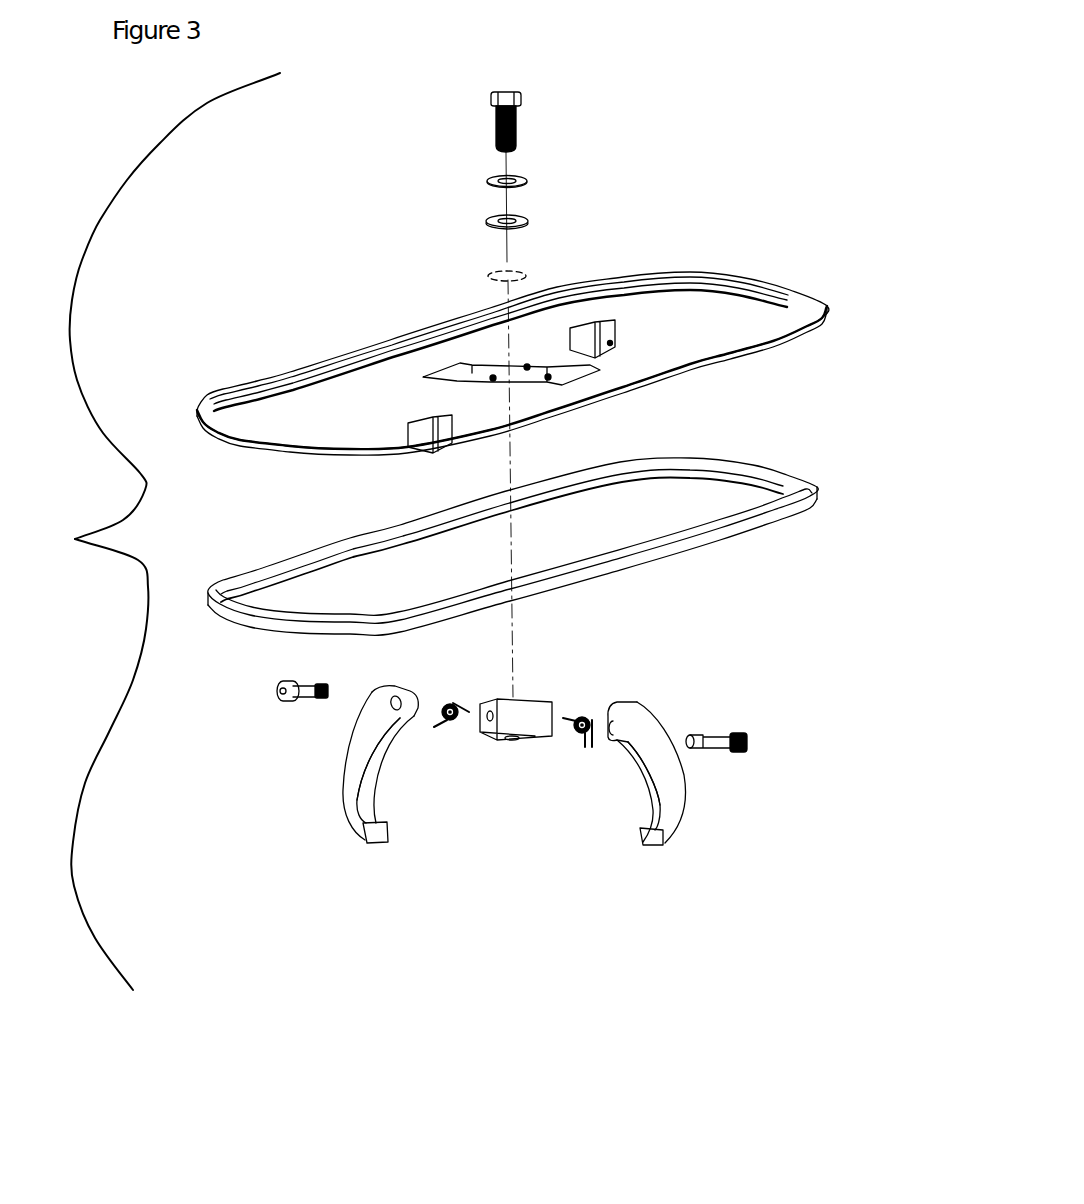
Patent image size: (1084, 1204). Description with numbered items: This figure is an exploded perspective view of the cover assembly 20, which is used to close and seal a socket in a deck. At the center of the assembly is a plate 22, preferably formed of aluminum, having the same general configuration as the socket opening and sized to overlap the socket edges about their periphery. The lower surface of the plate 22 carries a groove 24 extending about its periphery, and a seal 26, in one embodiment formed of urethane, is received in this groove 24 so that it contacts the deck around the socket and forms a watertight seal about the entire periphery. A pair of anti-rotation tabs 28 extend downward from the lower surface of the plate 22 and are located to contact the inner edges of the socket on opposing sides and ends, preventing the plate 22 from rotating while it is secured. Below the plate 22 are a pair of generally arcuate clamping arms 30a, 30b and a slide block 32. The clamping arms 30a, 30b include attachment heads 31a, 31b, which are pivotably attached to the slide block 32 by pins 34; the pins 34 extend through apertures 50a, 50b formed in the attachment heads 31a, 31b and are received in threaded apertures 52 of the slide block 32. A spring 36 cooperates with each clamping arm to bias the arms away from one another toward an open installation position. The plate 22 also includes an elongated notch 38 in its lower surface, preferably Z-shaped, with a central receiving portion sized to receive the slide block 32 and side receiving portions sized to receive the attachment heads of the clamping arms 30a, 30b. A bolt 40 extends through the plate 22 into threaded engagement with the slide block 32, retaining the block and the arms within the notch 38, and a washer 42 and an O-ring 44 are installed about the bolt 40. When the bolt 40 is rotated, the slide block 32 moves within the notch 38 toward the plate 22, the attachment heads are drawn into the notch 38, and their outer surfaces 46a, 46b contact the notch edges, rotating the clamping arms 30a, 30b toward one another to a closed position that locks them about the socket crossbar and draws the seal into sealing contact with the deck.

The cover assembly 20 is at (158, 531).
The plate 22 is at (755, 277).
The groove 24 is at (808, 336).
The seal 26 is at (817, 483).
The anti-rotation tabs 28 is at (610, 343).
The clamping arm 30a is at (330, 765).
The clamping arm 30b is at (674, 724).
The attachment head 31a is at (410, 717).
The attachment head 31b is at (613, 740).
The slide block 32 is at (532, 700).
The pins 34 is at (285, 702).
The spring 36 is at (448, 698).
The elongated notch 38 is at (548, 378).
The bolt 40 is at (519, 92).
The washer 42 is at (526, 176).
The O-ring 44 is at (529, 218).
The outer surface 46a is at (397, 690).
The outer surface 46b is at (620, 700).
The aperture 50a is at (393, 707).
The aperture 50b is at (607, 728).
The threaded apertures 52 is at (487, 717).